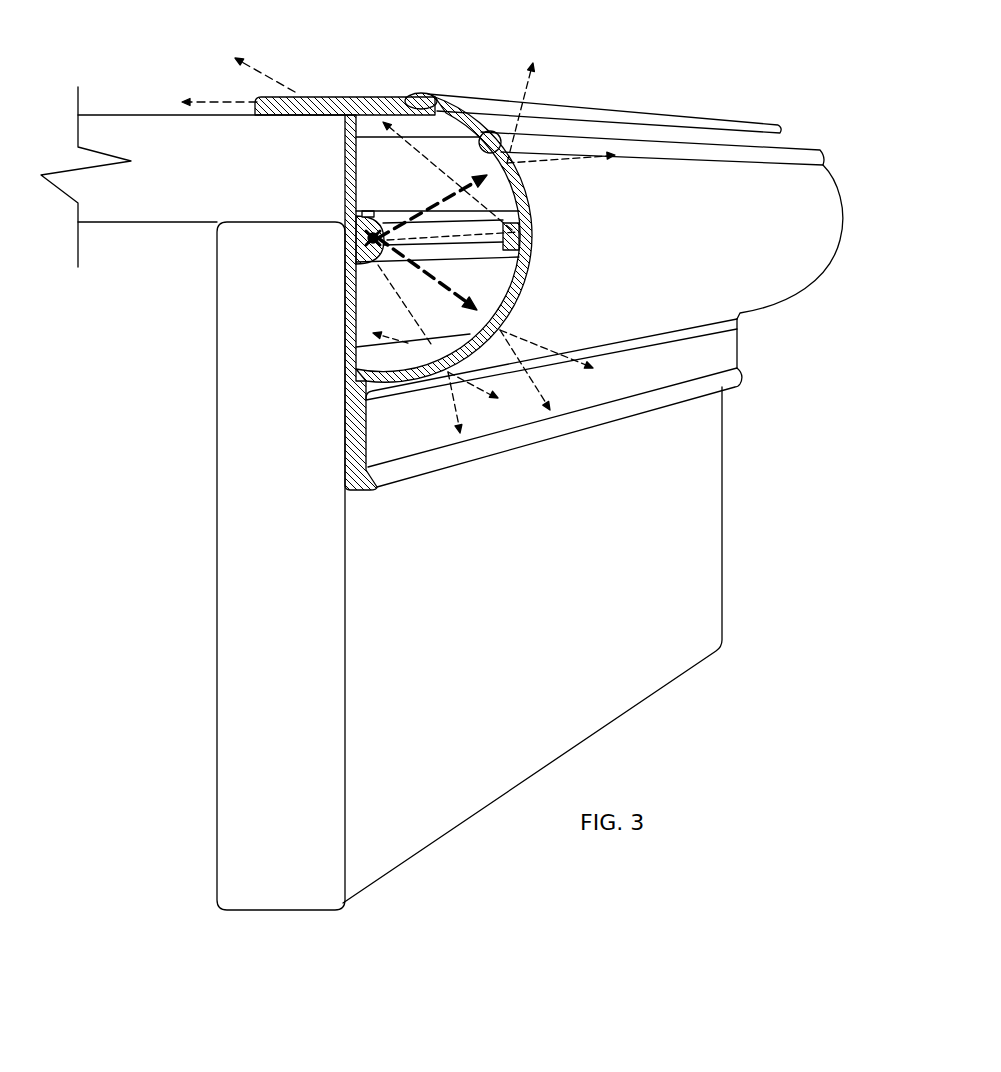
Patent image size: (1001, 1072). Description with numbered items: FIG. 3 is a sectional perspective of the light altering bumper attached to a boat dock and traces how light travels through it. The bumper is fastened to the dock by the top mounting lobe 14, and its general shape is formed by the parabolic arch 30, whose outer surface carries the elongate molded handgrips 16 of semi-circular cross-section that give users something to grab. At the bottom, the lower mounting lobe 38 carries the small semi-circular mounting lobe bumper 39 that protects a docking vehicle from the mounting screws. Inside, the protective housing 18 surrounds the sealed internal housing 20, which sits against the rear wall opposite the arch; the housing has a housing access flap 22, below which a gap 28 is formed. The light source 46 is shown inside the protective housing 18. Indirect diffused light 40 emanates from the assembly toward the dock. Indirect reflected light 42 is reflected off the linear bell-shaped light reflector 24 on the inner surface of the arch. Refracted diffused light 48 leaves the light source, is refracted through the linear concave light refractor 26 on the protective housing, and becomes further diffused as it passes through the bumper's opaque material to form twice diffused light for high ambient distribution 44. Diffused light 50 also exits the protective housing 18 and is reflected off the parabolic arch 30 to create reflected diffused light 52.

The top mounting lobe 14 is at (333, 95).
The molded handgrip 16 is at (780, 124).
The protective housing 18 is at (345, 198).
The sealed internal housing 20 is at (356, 218).
The housing access flap 22 is at (360, 242).
The linear bell-shaped light reflector 24 is at (520, 229).
The linear concave light refractor 26 is at (521, 254).
The gap 28 is at (356, 258).
The parabolic arch 30 is at (522, 283).
The lower mounting lobe 38 is at (382, 452).
The mounting lobe bumper 39 is at (453, 458).
The indirect diffused light 40 is at (250, 65).
The indirect reflected light 42 is at (412, 147).
The twice diffused light for high ambient distribution 44 is at (536, 74).
The light source 46 is at (370, 215).
The refracted diffused light 48 is at (464, 186).
The diffused light 50 is at (417, 325).
The reflected diffused light 52 is at (410, 343).